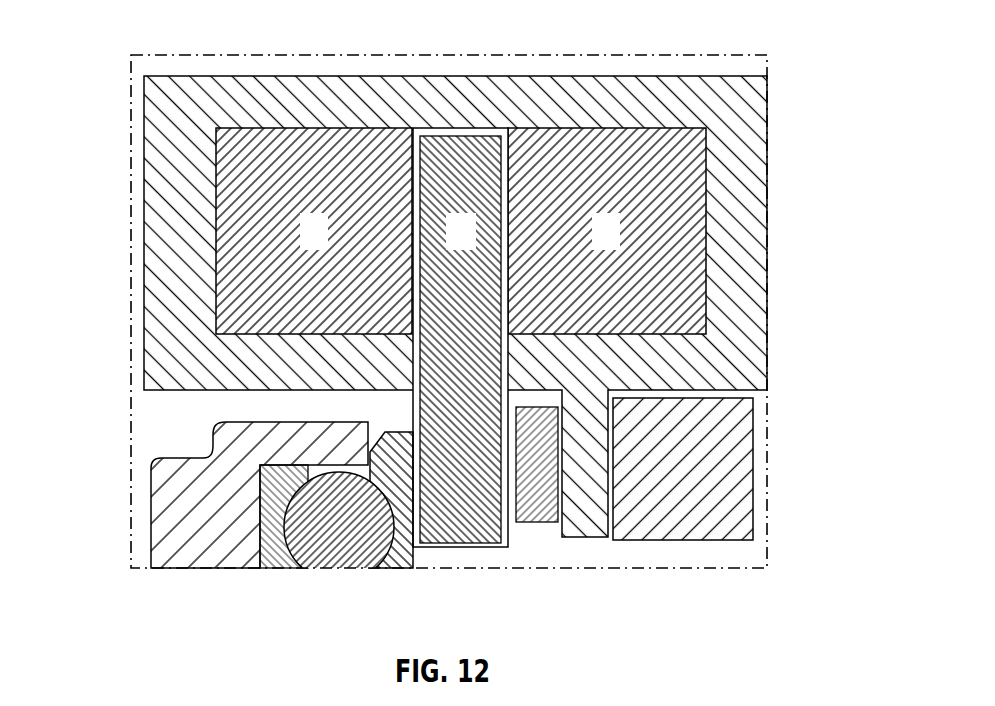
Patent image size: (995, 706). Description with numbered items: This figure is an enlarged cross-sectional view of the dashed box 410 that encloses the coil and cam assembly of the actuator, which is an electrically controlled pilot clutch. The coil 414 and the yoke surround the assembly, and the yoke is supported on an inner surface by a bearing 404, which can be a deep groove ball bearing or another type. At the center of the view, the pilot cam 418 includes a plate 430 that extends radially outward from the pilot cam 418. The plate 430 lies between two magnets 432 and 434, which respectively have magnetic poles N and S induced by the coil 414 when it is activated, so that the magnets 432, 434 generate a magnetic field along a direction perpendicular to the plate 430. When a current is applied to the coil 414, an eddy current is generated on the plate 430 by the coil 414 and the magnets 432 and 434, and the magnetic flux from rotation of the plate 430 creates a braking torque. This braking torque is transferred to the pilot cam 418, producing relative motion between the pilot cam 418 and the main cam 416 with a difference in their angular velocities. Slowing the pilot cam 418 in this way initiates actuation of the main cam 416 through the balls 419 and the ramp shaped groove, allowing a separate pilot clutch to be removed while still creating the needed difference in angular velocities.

The bearing 404 is at (742, 504).
The dashed box 410 is at (630, 55).
The coil 414 is at (182, 307).
The main cam 416 is at (195, 522).
The pilot cam 418 is at (402, 537).
The balls 419 is at (355, 543).
The plate 430 is at (473, 128).
The magnet 432 is at (317, 138).
The magnet 434 is at (680, 275).